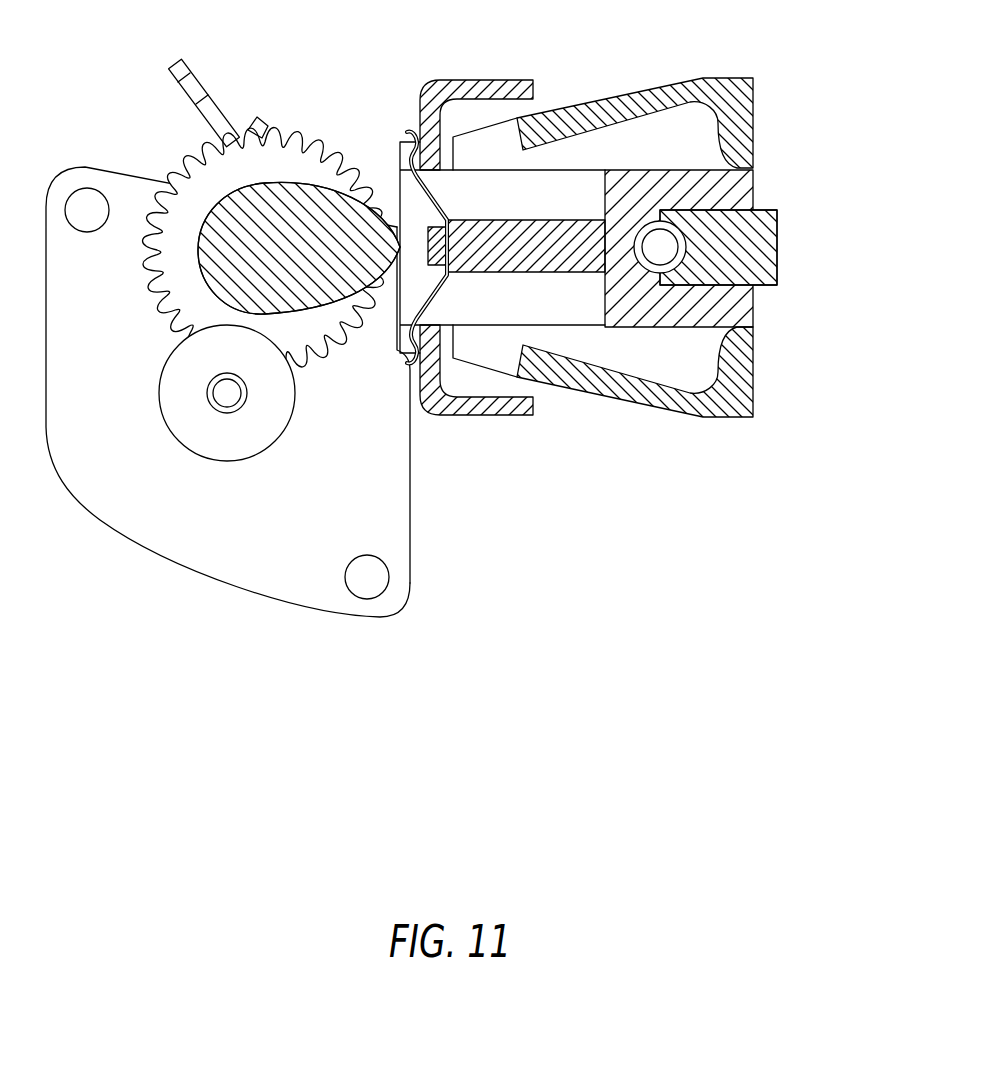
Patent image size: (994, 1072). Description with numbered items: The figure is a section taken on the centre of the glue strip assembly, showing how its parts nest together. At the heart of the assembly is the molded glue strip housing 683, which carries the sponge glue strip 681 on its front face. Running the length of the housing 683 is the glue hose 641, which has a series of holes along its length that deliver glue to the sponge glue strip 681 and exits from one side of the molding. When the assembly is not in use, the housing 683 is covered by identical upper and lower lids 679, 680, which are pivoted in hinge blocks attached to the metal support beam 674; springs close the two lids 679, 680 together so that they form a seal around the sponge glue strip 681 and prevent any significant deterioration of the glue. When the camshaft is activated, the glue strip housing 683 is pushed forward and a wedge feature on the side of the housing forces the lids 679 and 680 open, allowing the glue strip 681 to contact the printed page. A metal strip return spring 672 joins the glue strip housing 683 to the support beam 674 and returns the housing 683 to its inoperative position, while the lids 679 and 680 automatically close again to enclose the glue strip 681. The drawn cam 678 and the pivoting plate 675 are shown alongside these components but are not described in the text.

The glue hose 641 is at (683, 287).
The metal strip return spring 672 is at (397, 350).
The metal support beam 674 is at (468, 80).
The pivot plate 675 is at (177, 548).
The cam 678 is at (233, 222).
The upper lid 679 is at (623, 100).
The lower lid 680 is at (630, 402).
The sponge glue strip 681 is at (768, 232).
The glue strip housing 683 is at (745, 306).